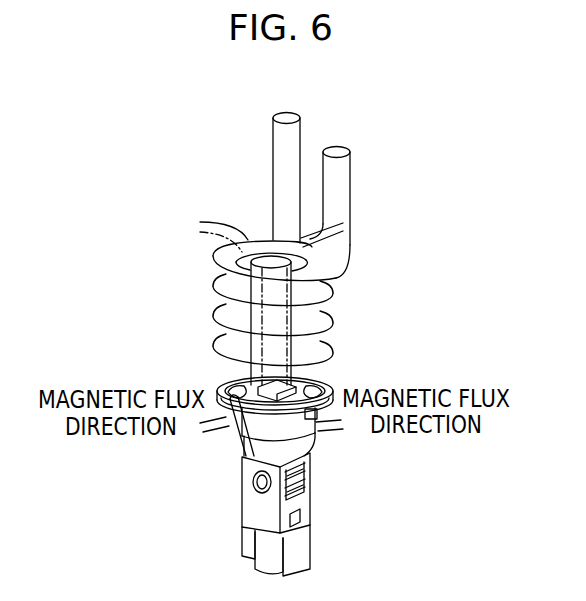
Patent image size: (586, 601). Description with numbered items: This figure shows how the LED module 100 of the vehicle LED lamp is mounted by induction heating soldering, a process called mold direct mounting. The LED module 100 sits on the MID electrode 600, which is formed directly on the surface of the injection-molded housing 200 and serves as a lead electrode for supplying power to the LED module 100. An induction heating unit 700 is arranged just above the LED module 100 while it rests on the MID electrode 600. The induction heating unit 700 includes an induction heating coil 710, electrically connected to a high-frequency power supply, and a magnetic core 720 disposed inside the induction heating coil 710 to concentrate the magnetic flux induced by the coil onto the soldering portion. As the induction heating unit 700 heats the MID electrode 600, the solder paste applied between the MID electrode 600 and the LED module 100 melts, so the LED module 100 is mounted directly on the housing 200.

The LED module 100 is at (312, 382).
The housing 200 is at (318, 437).
The MID electrode 600 is at (227, 437).
The induction heating unit 700 is at (399, 196).
The induction heating coil 710 is at (343, 211).
The magnetic core 720 is at (293, 255).